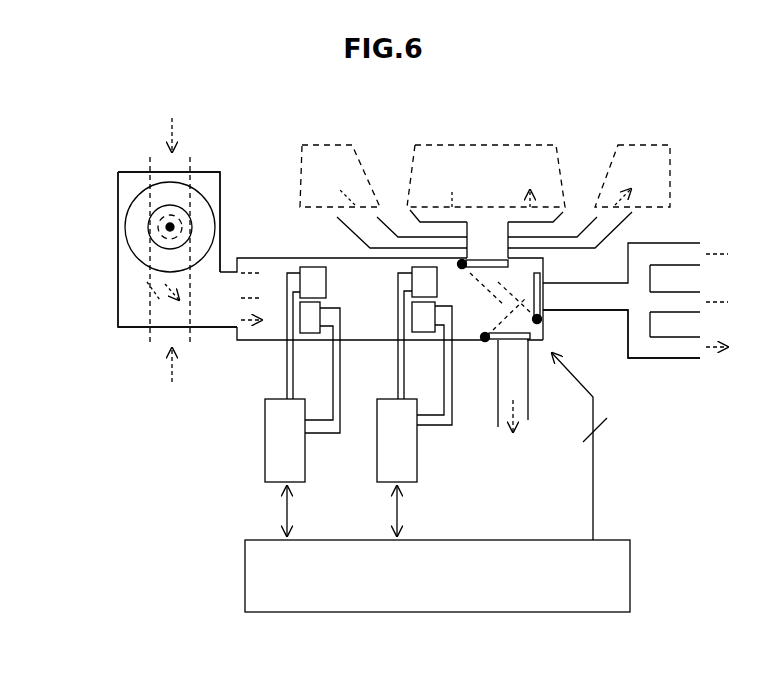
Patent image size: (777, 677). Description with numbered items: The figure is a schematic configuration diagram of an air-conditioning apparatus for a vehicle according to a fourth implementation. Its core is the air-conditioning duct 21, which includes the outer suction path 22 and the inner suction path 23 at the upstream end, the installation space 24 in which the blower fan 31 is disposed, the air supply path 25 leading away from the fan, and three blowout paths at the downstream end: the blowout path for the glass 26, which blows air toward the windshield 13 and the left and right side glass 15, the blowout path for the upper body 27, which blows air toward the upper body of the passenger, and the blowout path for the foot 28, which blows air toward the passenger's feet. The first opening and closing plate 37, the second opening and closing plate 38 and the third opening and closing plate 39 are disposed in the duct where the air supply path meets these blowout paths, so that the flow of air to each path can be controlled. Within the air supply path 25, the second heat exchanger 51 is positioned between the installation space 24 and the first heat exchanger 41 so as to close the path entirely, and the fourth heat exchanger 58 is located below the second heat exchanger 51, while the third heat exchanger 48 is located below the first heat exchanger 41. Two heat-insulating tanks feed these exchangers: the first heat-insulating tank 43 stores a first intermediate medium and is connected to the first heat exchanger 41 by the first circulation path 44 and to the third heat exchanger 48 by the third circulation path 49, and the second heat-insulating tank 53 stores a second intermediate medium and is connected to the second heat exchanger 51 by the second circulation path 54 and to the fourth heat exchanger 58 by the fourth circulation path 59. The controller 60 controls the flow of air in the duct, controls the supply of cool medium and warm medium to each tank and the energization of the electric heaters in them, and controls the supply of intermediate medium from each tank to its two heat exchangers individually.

The windshield 13 is at (522, 150).
The side glass 15 is at (337, 168).
The air-conditioning duct 21 is at (96, 243).
The outer suction path 22 is at (156, 140).
The inner suction path 23 is at (160, 343).
The installation space 24 is at (117, 296).
The air supply path 25 is at (273, 256).
The blowout path for the glass 26 is at (568, 252).
The blowout path for the upper body 27 is at (616, 318).
The blowout path for the foot 28 is at (529, 415).
The blower fan 31 is at (126, 222).
The first opening and closing plate 37 is at (498, 255).
The second opening and closing plate 38 is at (548, 296).
The third opening and closing plate 39 is at (508, 341).
The first heat exchanger 41 is at (431, 273).
The first heat-insulating tank 43 is at (418, 468).
The first circulation path 44 is at (397, 348).
The third heat exchanger 48 is at (425, 328).
The third circulation path 49 is at (452, 418).
The second heat exchanger 51 is at (312, 272).
The second heat-insulating tank 53 is at (264, 463).
The second circulation path 54 is at (285, 350).
The fourth heat exchanger 58 is at (310, 334).
The fourth circulation path 59 is at (328, 434).
The controller 60 is at (630, 540).